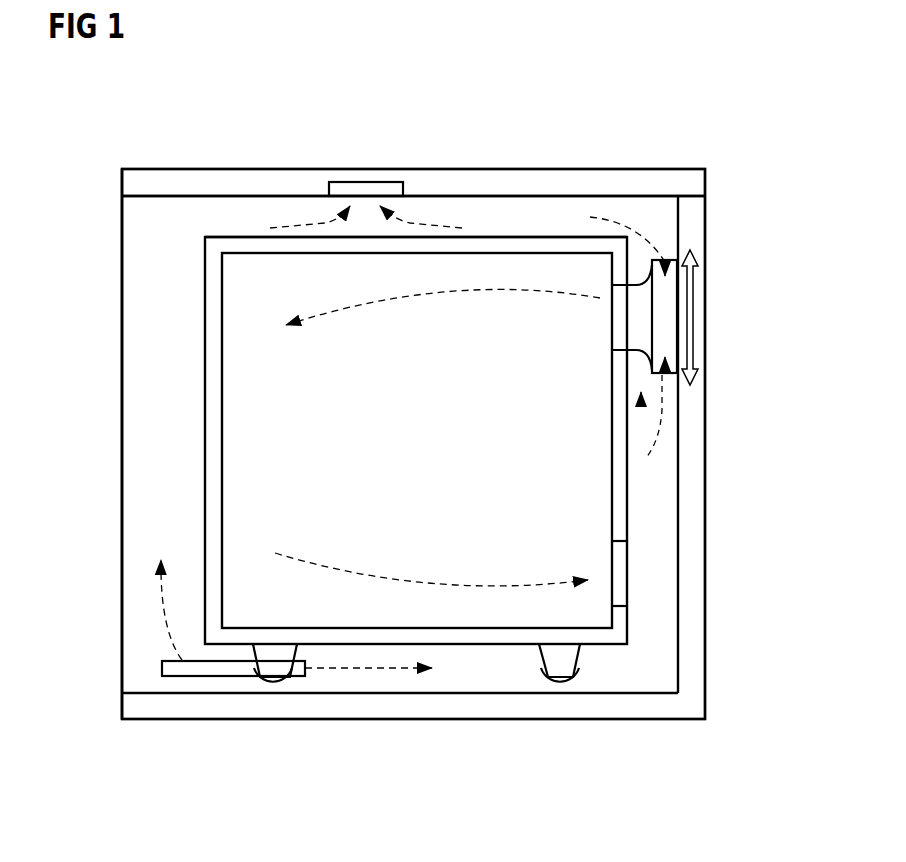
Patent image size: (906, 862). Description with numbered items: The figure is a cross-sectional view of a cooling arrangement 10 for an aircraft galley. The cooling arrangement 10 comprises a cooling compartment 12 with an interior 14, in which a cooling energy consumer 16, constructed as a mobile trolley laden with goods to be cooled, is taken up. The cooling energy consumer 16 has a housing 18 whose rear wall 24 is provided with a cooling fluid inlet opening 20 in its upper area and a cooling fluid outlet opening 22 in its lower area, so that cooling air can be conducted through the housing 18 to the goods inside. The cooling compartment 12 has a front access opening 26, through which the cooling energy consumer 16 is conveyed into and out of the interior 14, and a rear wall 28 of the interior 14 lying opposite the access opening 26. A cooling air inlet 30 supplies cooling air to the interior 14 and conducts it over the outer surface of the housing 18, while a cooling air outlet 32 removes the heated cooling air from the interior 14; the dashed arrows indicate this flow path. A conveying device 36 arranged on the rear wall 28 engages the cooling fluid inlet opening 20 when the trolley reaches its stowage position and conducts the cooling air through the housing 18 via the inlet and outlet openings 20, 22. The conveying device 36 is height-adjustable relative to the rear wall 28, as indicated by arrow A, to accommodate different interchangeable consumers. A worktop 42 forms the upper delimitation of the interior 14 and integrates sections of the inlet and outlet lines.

The cooling arrangement 10 is at (303, 86).
The cooling compartment 12 is at (184, 163).
The interior 14 is at (130, 220).
The cooling energy consumer 16 is at (183, 480).
The housing 18 is at (497, 230).
The cooling fluid inlet opening 20 is at (612, 313).
The cooling fluid outlet opening 22 is at (622, 585).
The rear wall 24 is at (622, 517).
The access opening 26 is at (116, 348).
The rear wall 28 is at (695, 228).
The cooling air inlet 30 is at (203, 684).
The cooling air outlet 32 is at (366, 194).
The conveying device 36 is at (640, 415).
The worktop 42 is at (610, 180).
The arrow A is at (695, 275).